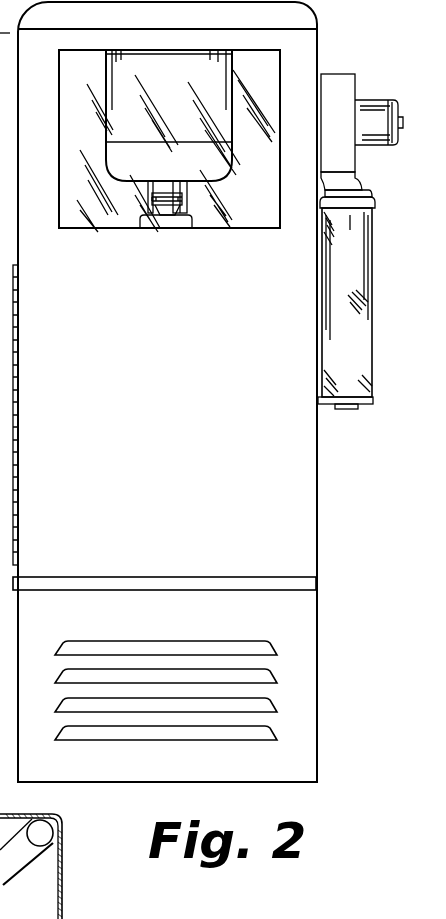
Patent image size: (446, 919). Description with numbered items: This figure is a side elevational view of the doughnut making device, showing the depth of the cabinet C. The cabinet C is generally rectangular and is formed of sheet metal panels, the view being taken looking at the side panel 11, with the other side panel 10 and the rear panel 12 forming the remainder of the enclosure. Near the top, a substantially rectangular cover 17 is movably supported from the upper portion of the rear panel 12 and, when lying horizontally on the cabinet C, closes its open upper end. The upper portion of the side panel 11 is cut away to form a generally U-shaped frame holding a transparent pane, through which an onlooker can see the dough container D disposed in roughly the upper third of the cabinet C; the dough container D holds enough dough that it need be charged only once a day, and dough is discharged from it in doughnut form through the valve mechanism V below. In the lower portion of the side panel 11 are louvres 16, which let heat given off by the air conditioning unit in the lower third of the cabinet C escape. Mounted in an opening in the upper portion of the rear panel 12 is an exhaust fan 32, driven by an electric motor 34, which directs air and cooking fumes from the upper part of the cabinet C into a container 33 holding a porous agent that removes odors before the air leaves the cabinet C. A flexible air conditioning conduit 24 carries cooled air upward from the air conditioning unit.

The cabinet C is at (317, 482).
The cover 17 is at (182, 21).
The side panel 11 is at (166, 442).
The dough container D is at (176, 93).
The valve mechanism V is at (190, 191).
The exhaust fan 32 is at (336, 74).
The electric motor 34 is at (378, 101).
The container 33 is at (374, 230).
The louvres 16 is at (135, 689).
The side panel 10 is at (40, 815).
The rear panel 12 is at (64, 909).
The flexible air conditioning conduit 24 is at (2, 887).